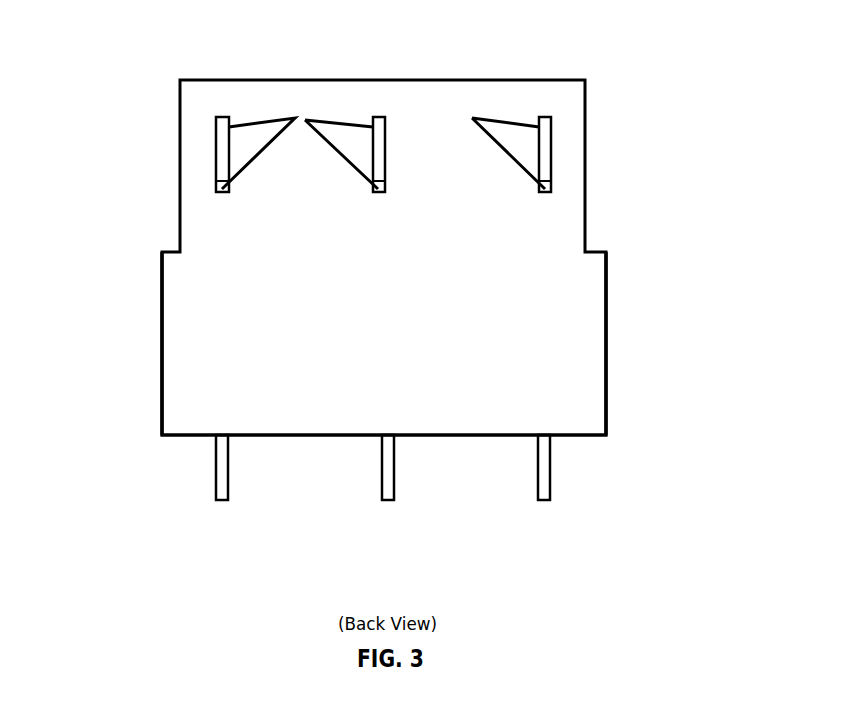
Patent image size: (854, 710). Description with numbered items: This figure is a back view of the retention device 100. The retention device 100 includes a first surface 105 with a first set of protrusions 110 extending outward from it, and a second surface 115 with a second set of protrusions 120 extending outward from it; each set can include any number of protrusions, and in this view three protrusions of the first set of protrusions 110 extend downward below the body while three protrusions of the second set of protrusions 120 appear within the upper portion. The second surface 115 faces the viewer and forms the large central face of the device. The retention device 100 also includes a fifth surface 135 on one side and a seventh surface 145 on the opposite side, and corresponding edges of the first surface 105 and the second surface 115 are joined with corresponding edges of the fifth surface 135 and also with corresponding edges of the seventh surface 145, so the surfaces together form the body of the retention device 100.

The retention device 100 is at (387, 323).
The first surface 105 is at (193, 440).
The first set of protrusions 110 is at (538, 502).
The second surface 115 is at (384, 343).
The second set of protrusions 120 is at (537, 116).
The fifth surface 135 is at (160, 338).
The seventh surface 145 is at (608, 338).